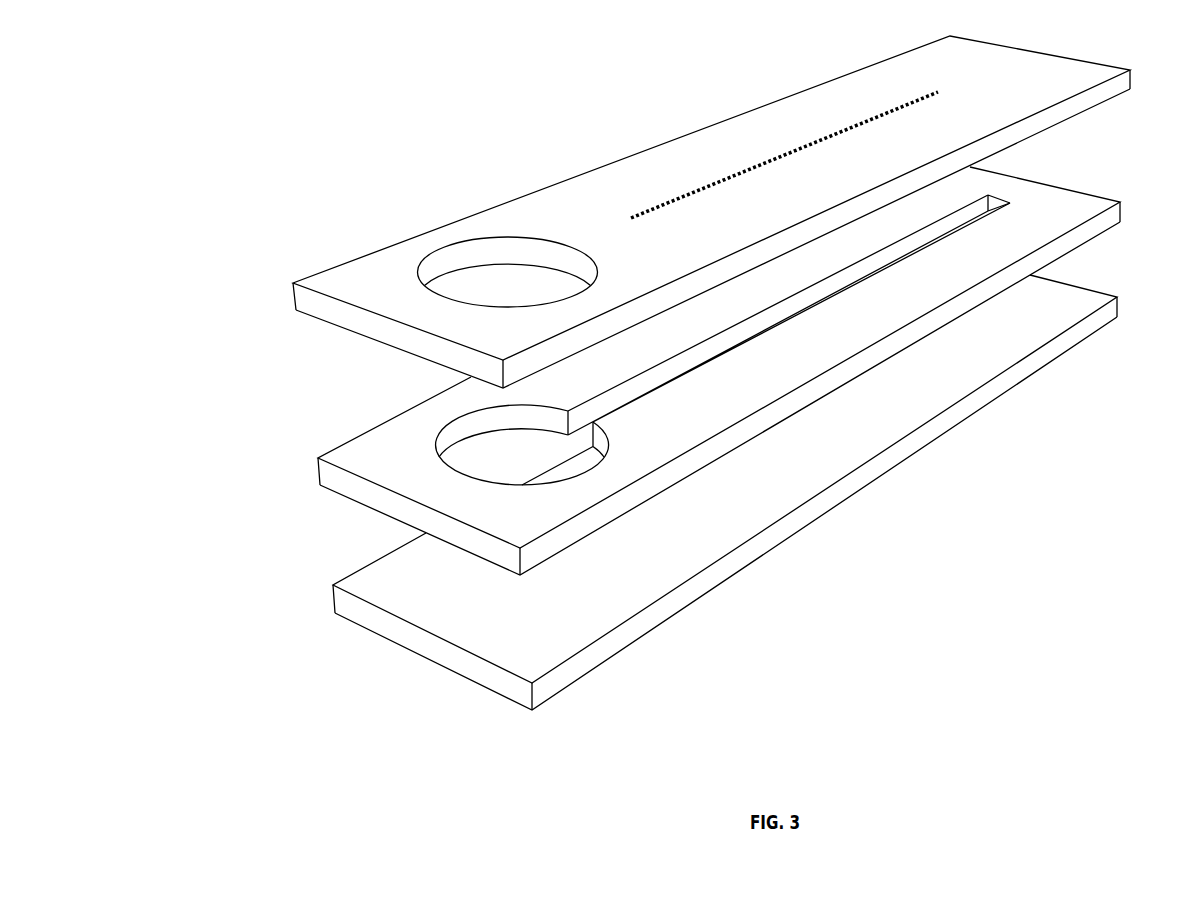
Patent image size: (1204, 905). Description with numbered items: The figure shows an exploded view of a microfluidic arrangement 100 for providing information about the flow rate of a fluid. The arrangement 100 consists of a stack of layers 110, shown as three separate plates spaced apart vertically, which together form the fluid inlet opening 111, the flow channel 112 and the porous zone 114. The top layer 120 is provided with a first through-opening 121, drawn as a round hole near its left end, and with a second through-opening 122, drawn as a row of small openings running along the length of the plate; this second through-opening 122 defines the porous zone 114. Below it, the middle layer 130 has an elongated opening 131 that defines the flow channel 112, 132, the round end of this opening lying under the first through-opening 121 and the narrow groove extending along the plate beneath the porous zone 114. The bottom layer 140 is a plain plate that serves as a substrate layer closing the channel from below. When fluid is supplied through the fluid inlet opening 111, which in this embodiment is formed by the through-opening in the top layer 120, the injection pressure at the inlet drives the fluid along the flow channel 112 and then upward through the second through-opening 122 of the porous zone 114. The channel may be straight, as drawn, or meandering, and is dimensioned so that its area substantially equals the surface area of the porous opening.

The arrangement 100 is at (153, 45).
The stack of layers 110 is at (1137, 70).
The fluid inlet opening 111 is at (458, 313).
The flow channel 112 is at (849, 289).
The porous zone 114 is at (743, 146).
The top layer 120 is at (293, 301).
The first through-opening 121 is at (522, 257).
The second through-opening 122 is at (641, 212).
The middle layer 130 is at (318, 470).
The elongated opening 131 is at (497, 425).
The flow channel 132 is at (973, 210).
The bottom layer 140 is at (335, 600).